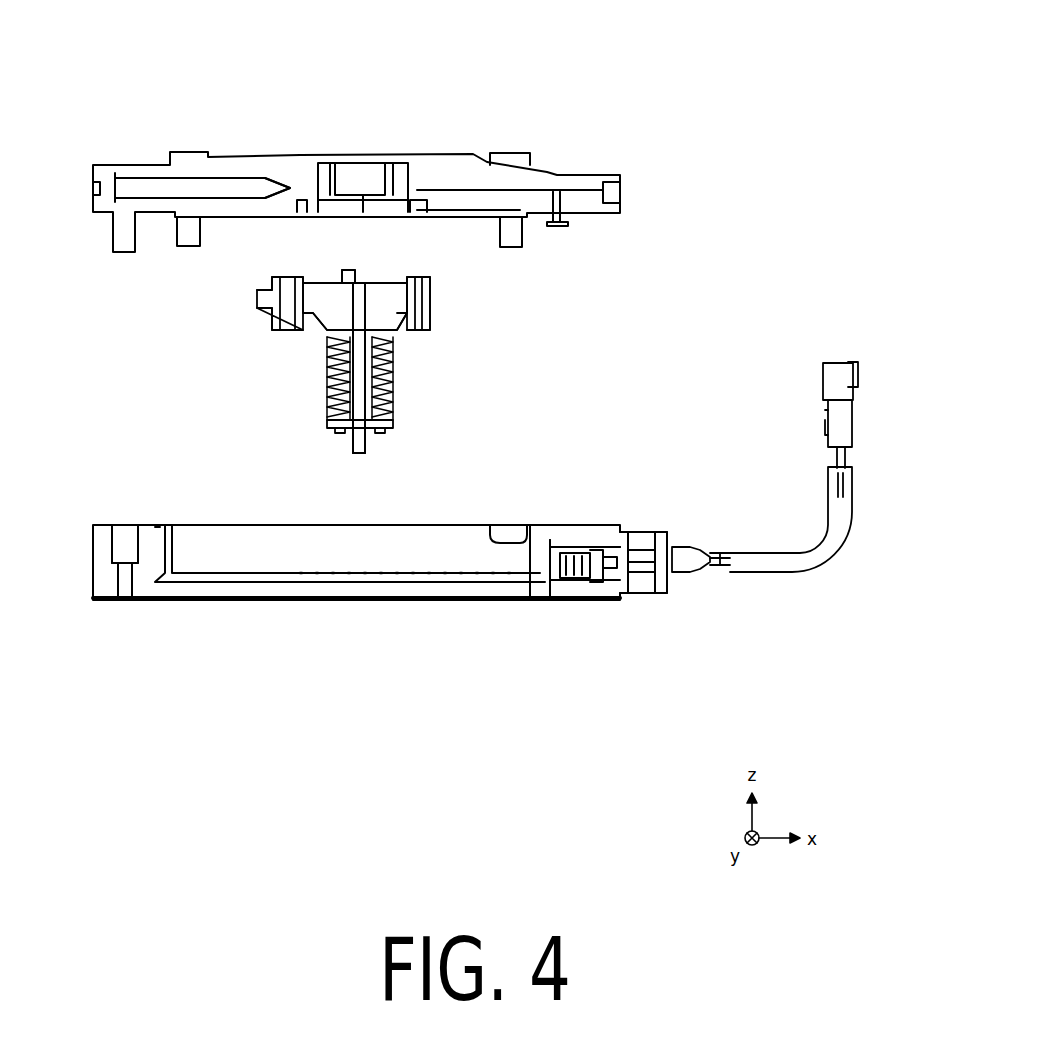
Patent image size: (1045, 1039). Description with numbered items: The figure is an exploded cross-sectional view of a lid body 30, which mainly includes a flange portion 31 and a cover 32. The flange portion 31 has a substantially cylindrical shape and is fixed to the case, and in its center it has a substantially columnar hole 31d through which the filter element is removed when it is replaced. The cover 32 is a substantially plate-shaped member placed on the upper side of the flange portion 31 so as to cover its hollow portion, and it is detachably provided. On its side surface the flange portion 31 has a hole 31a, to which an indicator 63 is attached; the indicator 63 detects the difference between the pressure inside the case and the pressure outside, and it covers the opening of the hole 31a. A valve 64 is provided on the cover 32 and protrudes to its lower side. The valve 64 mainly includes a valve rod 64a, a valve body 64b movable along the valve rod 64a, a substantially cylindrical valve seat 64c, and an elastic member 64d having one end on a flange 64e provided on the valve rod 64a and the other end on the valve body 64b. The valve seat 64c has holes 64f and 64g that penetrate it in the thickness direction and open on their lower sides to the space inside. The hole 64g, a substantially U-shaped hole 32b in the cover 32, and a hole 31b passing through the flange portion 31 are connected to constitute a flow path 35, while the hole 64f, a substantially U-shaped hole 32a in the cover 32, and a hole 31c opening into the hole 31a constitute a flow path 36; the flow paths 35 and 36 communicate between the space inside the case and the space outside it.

The lid body 30 is at (685, 29).
The flange portion 31 is at (570, 587).
The hole 31a is at (590, 530).
The hole 31b is at (128, 543).
The hole 31c is at (562, 527).
The hole 31d is at (513, 523).
The cover 32 is at (421, 160).
The hole 32a is at (548, 206).
The hole 32b is at (265, 185).
The flow path 35 is at (165, 295).
The flow path 36 is at (622, 275).
The indicator 63 is at (658, 545).
The valve 64 is at (378, 452).
The valve rod 64a is at (390, 360).
The valve body 64b is at (400, 330).
The valve seat 64c is at (305, 318).
The elastic member 64d is at (387, 420).
The flange 64e is at (340, 420).
The hole 64f is at (420, 313).
The hole 64g is at (290, 300).